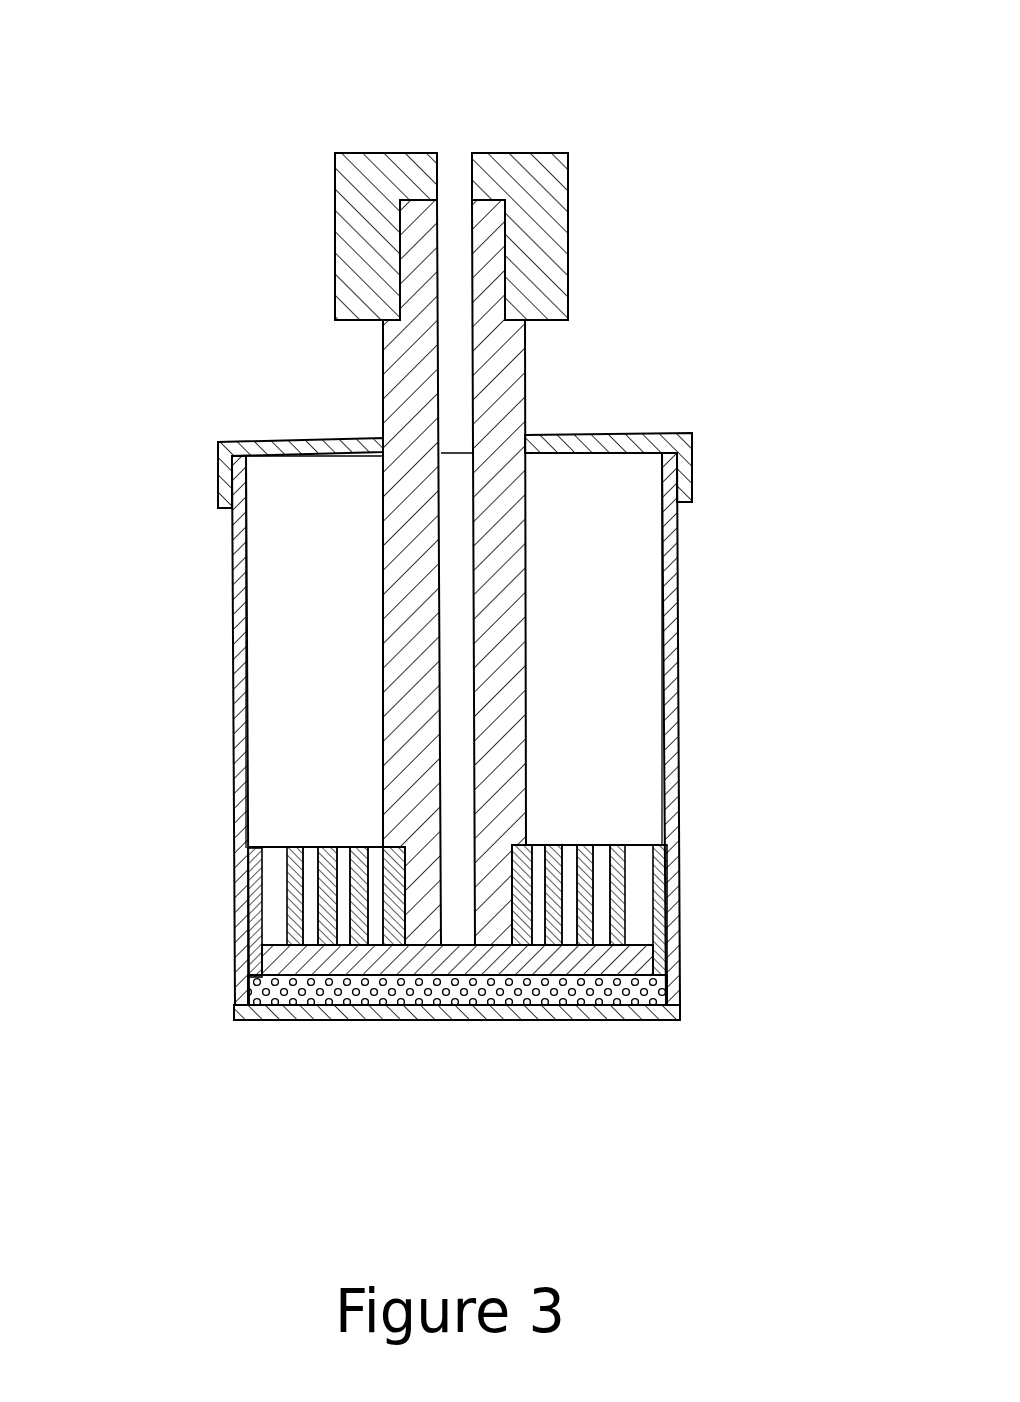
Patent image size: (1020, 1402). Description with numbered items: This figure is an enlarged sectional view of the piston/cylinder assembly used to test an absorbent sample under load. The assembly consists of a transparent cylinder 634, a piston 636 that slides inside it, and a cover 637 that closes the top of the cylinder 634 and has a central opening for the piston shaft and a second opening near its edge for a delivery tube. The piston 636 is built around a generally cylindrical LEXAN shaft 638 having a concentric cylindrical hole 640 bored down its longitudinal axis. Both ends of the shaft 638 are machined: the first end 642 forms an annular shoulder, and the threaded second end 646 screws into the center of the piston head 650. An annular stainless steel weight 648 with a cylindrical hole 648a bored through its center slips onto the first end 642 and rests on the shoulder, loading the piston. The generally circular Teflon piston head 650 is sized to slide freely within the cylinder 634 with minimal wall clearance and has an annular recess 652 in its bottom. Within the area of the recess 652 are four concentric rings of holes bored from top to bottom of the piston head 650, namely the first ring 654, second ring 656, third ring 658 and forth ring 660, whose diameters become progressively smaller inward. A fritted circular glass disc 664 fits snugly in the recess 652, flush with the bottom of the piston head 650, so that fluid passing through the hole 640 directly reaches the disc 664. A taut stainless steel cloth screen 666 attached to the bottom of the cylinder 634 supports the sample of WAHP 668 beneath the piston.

The cylinder 634 is at (678, 618).
The piston 636 is at (586, 598).
The cover 637 is at (218, 470).
The shaft 638 is at (384, 547).
The cylindrical hole 640 is at (455, 390).
The first end 642 is at (415, 295).
The second end 646 is at (500, 950).
The weight 648 is at (335, 240).
The cylindrical hole 648a is at (453, 170).
The piston head 650 is at (620, 845).
The annular recess 652 is at (302, 974).
The first ring 654 is at (270, 910).
The second ring 656 is at (313, 860).
The third ring 658 is at (342, 858).
The forth ring 660 is at (375, 850).
The fritted circular glass disc 664 is at (628, 1002).
The mesh stainless steel cloth screen 666 is at (467, 1020).
The sample of WAHP 668 is at (364, 1000).